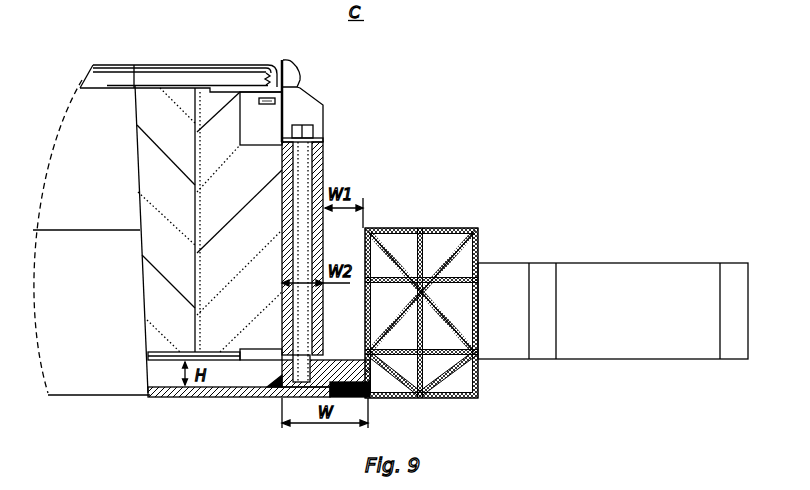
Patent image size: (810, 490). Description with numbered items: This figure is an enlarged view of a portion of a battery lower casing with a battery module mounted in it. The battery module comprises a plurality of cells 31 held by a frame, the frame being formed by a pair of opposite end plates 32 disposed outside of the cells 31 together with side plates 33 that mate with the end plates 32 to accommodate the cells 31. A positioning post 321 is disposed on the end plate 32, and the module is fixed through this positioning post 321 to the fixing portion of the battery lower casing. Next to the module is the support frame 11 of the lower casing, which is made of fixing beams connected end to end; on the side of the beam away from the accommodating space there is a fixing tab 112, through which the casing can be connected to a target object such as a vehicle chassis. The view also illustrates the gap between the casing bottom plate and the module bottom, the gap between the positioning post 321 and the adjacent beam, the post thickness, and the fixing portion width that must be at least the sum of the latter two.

The side plate 33 is at (87, 108).
The cell 31 is at (163, 290).
The end plate 32 is at (307, 112).
The positioning post 321 is at (323, 158).
The support frame 11 is at (443, 228).
The fixing tab 112 is at (583, 272).